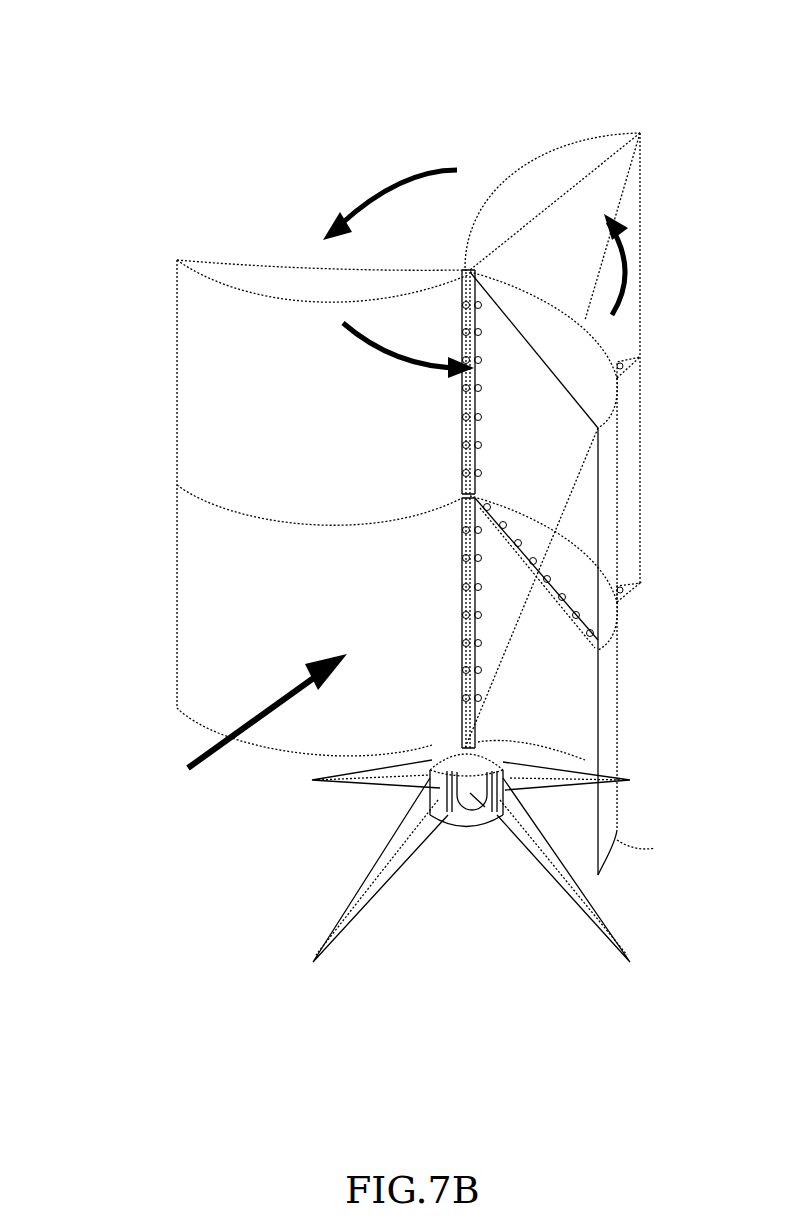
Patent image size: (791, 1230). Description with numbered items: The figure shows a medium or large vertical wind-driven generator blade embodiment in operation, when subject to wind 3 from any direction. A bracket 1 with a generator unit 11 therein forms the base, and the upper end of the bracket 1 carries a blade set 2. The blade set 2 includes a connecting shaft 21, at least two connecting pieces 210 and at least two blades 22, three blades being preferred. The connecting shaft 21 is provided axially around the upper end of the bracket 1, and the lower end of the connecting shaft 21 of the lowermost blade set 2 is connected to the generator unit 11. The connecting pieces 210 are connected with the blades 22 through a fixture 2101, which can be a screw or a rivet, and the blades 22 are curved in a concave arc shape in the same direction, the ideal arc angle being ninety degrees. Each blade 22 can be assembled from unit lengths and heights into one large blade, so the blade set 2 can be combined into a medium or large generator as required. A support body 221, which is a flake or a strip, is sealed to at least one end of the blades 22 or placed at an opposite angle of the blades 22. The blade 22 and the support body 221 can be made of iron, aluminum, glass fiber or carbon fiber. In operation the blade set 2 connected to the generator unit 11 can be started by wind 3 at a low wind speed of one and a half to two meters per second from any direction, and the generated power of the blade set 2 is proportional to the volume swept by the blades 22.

The bracket 1 is at (305, 920).
The generator unit 11 is at (485, 808).
The blade set 2 is at (322, 108).
The connecting shaft 21 is at (466, 270).
The connecting piece 210 is at (462, 440).
The fixture 2101 is at (462, 487).
The blade 22 is at (213, 585).
The support body 221 is at (275, 273).
The wind 3 is at (190, 727).